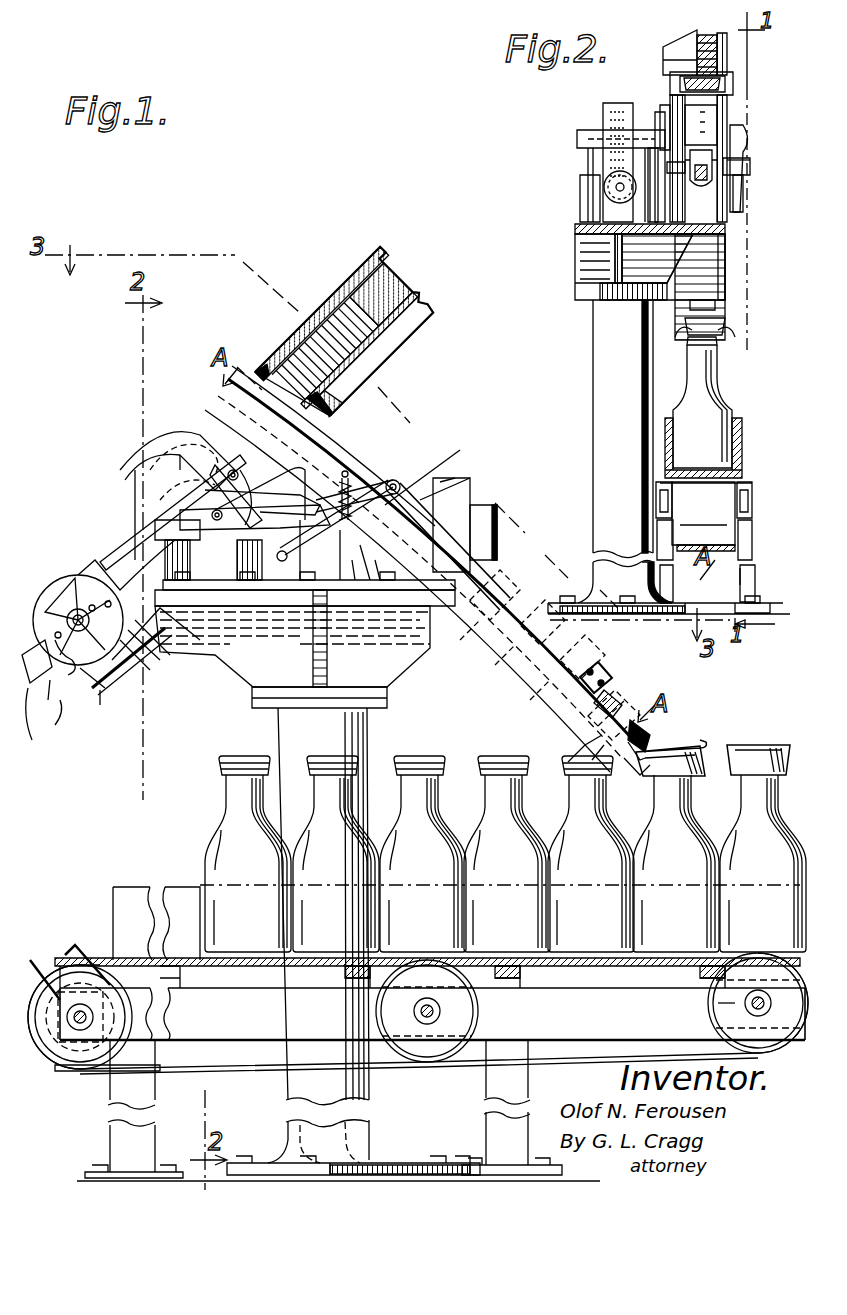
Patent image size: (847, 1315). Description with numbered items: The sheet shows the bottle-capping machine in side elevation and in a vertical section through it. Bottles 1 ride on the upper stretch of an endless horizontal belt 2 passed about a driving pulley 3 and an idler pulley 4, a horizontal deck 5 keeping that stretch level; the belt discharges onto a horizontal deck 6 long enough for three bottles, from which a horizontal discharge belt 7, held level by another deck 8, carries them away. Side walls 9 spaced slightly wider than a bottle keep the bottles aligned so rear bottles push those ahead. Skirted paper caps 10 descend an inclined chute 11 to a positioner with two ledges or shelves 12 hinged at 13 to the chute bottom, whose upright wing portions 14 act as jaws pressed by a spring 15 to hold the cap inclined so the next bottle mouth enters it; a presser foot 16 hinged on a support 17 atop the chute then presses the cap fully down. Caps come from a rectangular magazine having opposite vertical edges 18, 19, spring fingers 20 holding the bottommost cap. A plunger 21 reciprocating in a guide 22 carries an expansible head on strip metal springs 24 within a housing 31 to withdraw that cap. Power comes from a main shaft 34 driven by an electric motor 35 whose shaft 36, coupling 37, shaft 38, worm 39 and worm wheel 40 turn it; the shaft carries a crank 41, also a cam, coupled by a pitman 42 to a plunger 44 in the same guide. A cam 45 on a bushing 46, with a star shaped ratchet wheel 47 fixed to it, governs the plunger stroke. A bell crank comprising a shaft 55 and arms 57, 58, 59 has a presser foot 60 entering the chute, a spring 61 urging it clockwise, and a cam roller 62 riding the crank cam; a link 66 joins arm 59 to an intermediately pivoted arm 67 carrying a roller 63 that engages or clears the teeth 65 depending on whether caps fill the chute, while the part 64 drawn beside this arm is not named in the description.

In FIG. 1, the bottles 1 is at (320, 798).
In FIG. 2, the bottles 1 is at (705, 382).
In FIG. 1, the endless horizontal belt 2 is at (128, 962).
In FIG. 2, the endless horizontal belt 2 is at (690, 570).
In FIG. 1, the pulley 3 is at (80, 1060).
In FIG. 1, the pulley 4 is at (462, 1014).
In FIG. 1, the horizontal deck 5 is at (250, 968).
In FIG. 2, the horizontal deck 5 is at (706, 478).
In FIG. 1, the horizontal deck 6 is at (598, 968).
In FIG. 1, the horizontal discharge belt 7 is at (714, 1005).
In FIG. 1, the horizontal deck 8 is at (790, 968).
In FIG. 1, the side walls 9 is at (133, 893).
In FIG. 2, the side walls 9 is at (665, 425).
In FIG. 1, the cap 10 is at (372, 290).
In FIG. 2, the cap 10 is at (718, 62).
In FIG. 1, the chute 11 is at (330, 455).
In FIG. 2, the chute 11 is at (725, 280).
In FIG. 1, the ledges or shelves 12 is at (588, 735).
In FIG. 2, the ledges or shelves 12 is at (702, 296).
In FIG. 1, the hinge 13 is at (612, 703).
In FIG. 1, the upright wing portions 14 is at (592, 762).
In FIG. 2, the upright wing portions 14 is at (735, 325).
In FIG. 1, the spring 15 is at (648, 735).
In FIG. 1, the presser foot 16 is at (690, 745).
In FIG. 1, the support 17 is at (604, 690).
In FIG. 1, the longitudinal edge 18 is at (332, 302).
In FIG. 2, the longitudinal edge 18 is at (680, 47).
In FIG. 1, the longitudinal edge 19 is at (402, 332).
In FIG. 1, the spring fingers 20 is at (280, 350).
In FIG. 1, the plunger 21 is at (180, 582).
In FIG. 2, the plunger 21 is at (701, 186).
In FIG. 1, the guide 22 is at (112, 600).
In FIG. 1, the strip metal springs 24 is at (175, 545).
In FIG. 2, the strip metal springs 24 is at (727, 135).
In FIG. 1, the housing 31 is at (205, 435).
In FIG. 2, the housing 31 is at (684, 98).
In FIG. 2, the main shaft 34 is at (577, 140).
In FIG. 1, the electric motor 35 is at (430, 482).
In FIG. 2, the electric motor 35 is at (580, 185).
In FIG. 1, the motor shaft 36 is at (405, 638).
In FIG. 1, the coupling 37 is at (338, 590).
In FIG. 2, the shaft 38 is at (618, 190).
In FIG. 2, the worm 39 is at (578, 234).
In FIG. 2, the worm wheel 40 is at (603, 116).
In FIG. 2, the crank 41 is at (655, 118).
In FIG. 2, the pitman 42 is at (725, 245).
In FIG. 1, the plunger 44 is at (46, 712).
In FIG. 1, the cam 45 is at (105, 690).
In FIG. 1, the bushing 46 is at (85, 662).
In FIG. 1, the star shaped ratchet wheel 47 is at (80, 690).
In FIG. 1, the shaft 55 is at (393, 480).
In FIG. 1, the arm 57 is at (460, 500).
In FIG. 1, the arm 58 is at (282, 505).
In FIG. 2, the arm 58 is at (650, 182).
In FIG. 1, the arm 59 is at (298, 590).
In FIG. 2, the arm 59 is at (743, 205).
In FIG. 1, the presser foot 60 is at (490, 632).
In FIG. 1, the spring 61 is at (342, 476).
In FIG. 1, the cam roller 62 is at (180, 545).
In FIG. 2, the cam roller 62 is at (650, 267).
In FIG. 1, the roller 63 is at (92, 563).
In FIG. 1, the bracket 64 is at (145, 665).
In FIG. 1, the teeth 65 is at (105, 600).
In FIG. 1, the link 66 is at (245, 500).
In FIG. 2, the link 66 is at (748, 170).
In FIG. 1, the intermediately pivoted arm 67 is at (130, 540).
In FIG. 2, the intermediately pivoted arm 67 is at (745, 150).